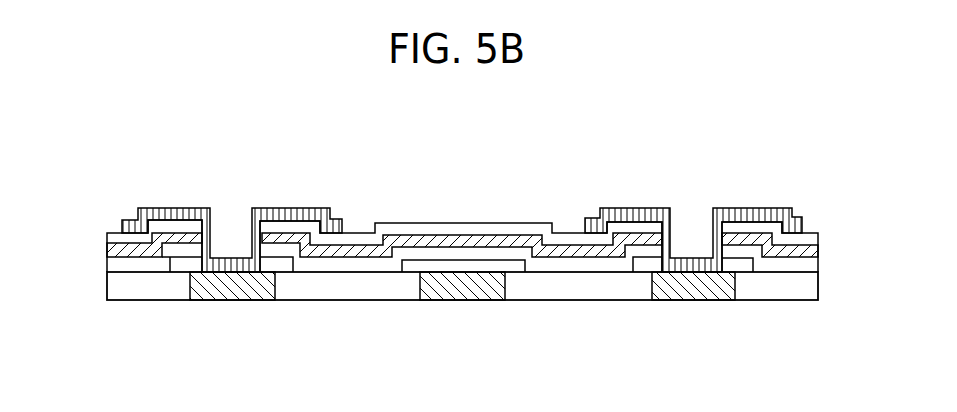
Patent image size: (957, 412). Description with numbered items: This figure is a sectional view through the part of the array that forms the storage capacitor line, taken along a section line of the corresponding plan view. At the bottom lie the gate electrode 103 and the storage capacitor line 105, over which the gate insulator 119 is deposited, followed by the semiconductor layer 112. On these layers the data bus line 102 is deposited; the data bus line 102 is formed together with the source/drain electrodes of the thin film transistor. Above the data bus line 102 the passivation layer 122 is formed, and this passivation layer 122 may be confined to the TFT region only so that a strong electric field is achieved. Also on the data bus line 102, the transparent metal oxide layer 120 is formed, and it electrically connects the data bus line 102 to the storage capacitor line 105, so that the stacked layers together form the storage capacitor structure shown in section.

The data bus line 102 is at (590, 253).
The gate electrode 103 is at (485, 290).
The storage capacitor line 105 is at (247, 290).
The semiconductor layer 112 is at (793, 268).
The gate insulator 119 is at (352, 290).
The transparent metal oxide layer 120 is at (310, 208).
The passivation layer 122 is at (639, 225).